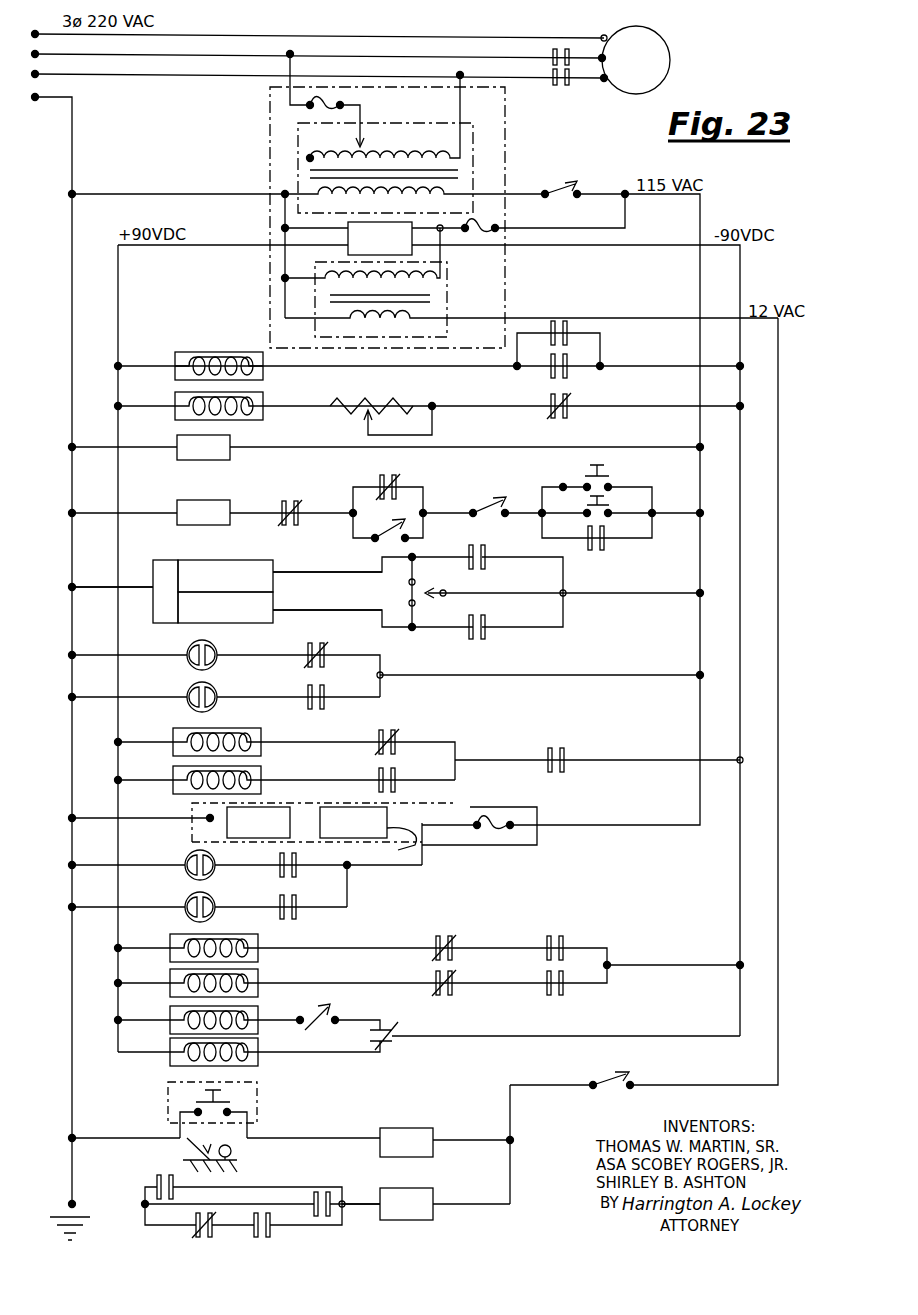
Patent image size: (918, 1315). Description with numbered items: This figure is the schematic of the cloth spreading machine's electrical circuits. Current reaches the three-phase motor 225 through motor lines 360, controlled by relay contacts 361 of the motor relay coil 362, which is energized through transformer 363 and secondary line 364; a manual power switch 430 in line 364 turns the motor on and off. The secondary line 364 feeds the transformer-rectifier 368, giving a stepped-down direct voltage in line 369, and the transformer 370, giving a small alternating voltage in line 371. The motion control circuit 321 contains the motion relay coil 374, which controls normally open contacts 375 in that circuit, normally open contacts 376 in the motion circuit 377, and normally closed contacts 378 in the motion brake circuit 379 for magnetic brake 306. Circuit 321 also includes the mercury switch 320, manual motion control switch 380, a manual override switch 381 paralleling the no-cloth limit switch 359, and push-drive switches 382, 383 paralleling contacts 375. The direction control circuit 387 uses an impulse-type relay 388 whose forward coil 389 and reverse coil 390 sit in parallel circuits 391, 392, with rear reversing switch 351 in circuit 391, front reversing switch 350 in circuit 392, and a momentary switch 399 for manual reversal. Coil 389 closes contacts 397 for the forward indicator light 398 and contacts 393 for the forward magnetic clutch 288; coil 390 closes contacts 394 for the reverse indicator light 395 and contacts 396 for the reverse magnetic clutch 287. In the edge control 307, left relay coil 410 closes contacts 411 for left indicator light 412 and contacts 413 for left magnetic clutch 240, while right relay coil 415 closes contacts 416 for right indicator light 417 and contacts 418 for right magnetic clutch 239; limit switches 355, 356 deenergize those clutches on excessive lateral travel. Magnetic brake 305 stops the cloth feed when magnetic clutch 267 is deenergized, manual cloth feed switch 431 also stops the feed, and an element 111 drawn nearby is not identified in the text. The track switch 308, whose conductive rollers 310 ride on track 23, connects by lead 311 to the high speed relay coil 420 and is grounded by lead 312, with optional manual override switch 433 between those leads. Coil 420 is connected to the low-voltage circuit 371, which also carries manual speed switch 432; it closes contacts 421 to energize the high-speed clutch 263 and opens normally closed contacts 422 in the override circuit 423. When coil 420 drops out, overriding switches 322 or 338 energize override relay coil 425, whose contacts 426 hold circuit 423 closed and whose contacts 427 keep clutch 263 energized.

The track 23 is at (184, 1160).
The limit switch contact 111 is at (399, 1048).
The three-phase motor 225 is at (656, 72).
The right magnetic clutch 239 is at (262, 977).
The left magnetic clutch 240 is at (262, 941).
The high-speed magnetic clutch 263 is at (224, 350).
The magnetic clutch 267 is at (261, 1012).
The reverse magnetic clutch 287 is at (265, 772).
The forward magnetic clutch 288 is at (265, 735).
The magnetic brake 305 is at (261, 1045).
The magnetic brake 306 is at (262, 400).
The edge-control 307 is at (533, 806).
The track switch 308 is at (205, 1137).
The conductive contact rollers 310 is at (232, 1152).
The electrical lead 311 is at (302, 1138).
The lead 312 is at (132, 1138).
The mercury switch 320 is at (282, 514).
The motion control circuit 321 is at (128, 511).
The overriding cam switch 322 is at (156, 1182).
The overriding high-speed switch 338 is at (316, 1198).
The button reversing switch 350 is at (485, 640).
The rear button reversing switch 351 is at (488, 540).
The limit switch 355 is at (454, 950).
The limit switch 356 is at (455, 986).
The no-cloth limit switch 359 is at (380, 486).
The motor lines 360 is at (213, 62).
The relay contacts 361 is at (555, 61).
The motor relay coil 362 is at (222, 458).
The transformer 363 is at (477, 156).
The secondary line 364 is at (595, 194).
The transformer-rectifier 368 is at (400, 250).
The line 369 is at (580, 246).
The transformer 370 is at (446, 302).
The line 371 is at (640, 306).
The motion relay coil 374 is at (222, 523).
The relay contacts 375 is at (604, 550).
The relay contacts 376 is at (567, 757).
The motion circuit 377 is at (479, 758).
The relay contacts 378 is at (574, 410).
The motion brake circuit 379 is at (477, 406).
The manual motion control switch 380 is at (491, 505).
The manual override switch 381 is at (373, 546).
The push-drive switch 382 is at (603, 470).
The push-drive switch 383 is at (612, 502).
The direction control circuit 387 is at (98, 578).
The impulse-type relay 388 is at (145, 568).
The forward coil 389 is at (213, 564).
The reverse coil 390 is at (235, 624).
The parallel circuit 391 is at (310, 576).
The parallel circuit 392 is at (327, 610).
The relay contacts 393 is at (392, 737).
The relay contacts 394 is at (326, 709).
The reverse indicator light 395 is at (218, 707).
The relay contacts 396 is at (395, 777).
The relay contacts 397 is at (325, 668).
The forward indicator light 398 is at (218, 666).
The manual momentary switch 399 is at (436, 581).
The left relay coil 410 is at (300, 800).
The relay contacts 411 is at (279, 862).
The left indicator light 412 is at (184, 864).
The relay contacts 413 is at (566, 947).
The right relay coil 415 is at (396, 848).
The relay contacts 416 is at (279, 904).
The right indicator light 417 is at (184, 903).
The relay contacts 418 is at (566, 995).
The high speed relay coil 420 is at (425, 1151).
The relay contacts 421 is at (588, 310).
The relay contacts 422 is at (195, 1222).
The high speed override circuit 423 is at (484, 1204).
The high-speed override relay coil 425 is at (425, 1214).
The relay contacts 426 is at (272, 1214).
The relay contacts 427 is at (548, 378).
The manual motor or power switch 430 is at (557, 188).
The manual cloth feed switch 431 is at (328, 1031).
The manual switch 432 is at (600, 1070).
The manual override high speed switch 433 is at (224, 1092).